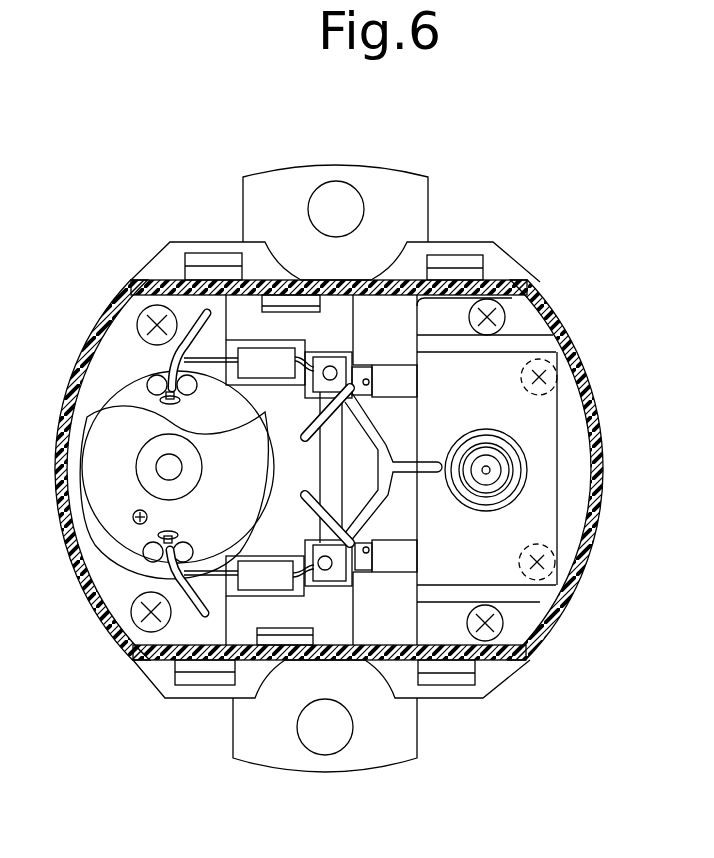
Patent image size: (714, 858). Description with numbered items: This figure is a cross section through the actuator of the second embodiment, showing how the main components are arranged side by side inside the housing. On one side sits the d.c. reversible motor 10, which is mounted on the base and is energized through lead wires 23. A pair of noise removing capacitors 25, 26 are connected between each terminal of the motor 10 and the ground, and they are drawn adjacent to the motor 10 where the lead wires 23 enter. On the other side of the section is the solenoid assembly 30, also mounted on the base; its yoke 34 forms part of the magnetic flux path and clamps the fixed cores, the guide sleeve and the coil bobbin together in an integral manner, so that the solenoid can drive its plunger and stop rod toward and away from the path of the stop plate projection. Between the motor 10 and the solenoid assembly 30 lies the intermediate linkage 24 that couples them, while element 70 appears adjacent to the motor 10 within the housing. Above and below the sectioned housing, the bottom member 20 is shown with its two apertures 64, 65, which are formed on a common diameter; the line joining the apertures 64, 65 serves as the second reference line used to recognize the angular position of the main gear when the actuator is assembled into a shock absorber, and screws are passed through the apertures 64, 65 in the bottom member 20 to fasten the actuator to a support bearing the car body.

The d.c. reversible motor 10 is at (92, 497).
The bottom member 20 is at (413, 212).
The lead wires 23 is at (196, 330).
The spring arms 24 is at (303, 434).
The noise removing capacitor 25 is at (240, 352).
The noise removing capacitor 26 is at (247, 590).
The solenoid assembly 30 is at (563, 518).
The yoke 34 is at (545, 463).
The aperture 64 is at (332, 748).
The aperture 65 is at (338, 182).
The rotor wheel 70 is at (87, 417).